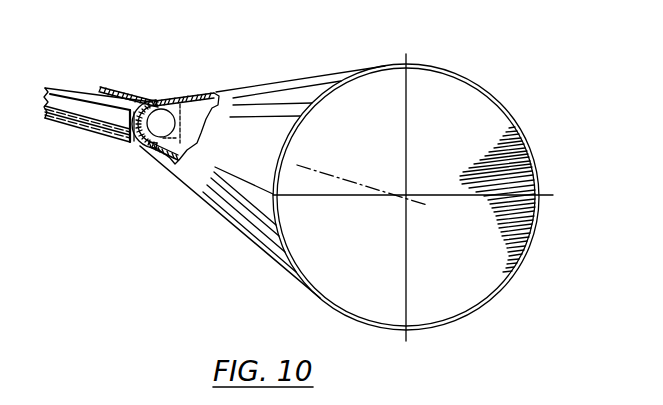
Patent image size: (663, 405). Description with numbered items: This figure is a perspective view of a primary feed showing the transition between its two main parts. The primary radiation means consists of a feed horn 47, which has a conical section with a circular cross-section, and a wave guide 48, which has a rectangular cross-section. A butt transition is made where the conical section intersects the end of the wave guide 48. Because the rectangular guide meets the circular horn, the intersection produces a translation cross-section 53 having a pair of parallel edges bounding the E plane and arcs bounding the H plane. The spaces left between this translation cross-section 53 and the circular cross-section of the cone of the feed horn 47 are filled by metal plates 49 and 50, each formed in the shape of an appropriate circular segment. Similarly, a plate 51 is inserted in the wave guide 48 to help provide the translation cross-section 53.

The feed horn 47 is at (355, 73).
The wave guide 48 is at (97, 91).
The metal plate 49 is at (173, 103).
The metal plate 50 is at (173, 163).
The plate 51 is at (138, 138).
The translation cross-section 53 is at (157, 126).